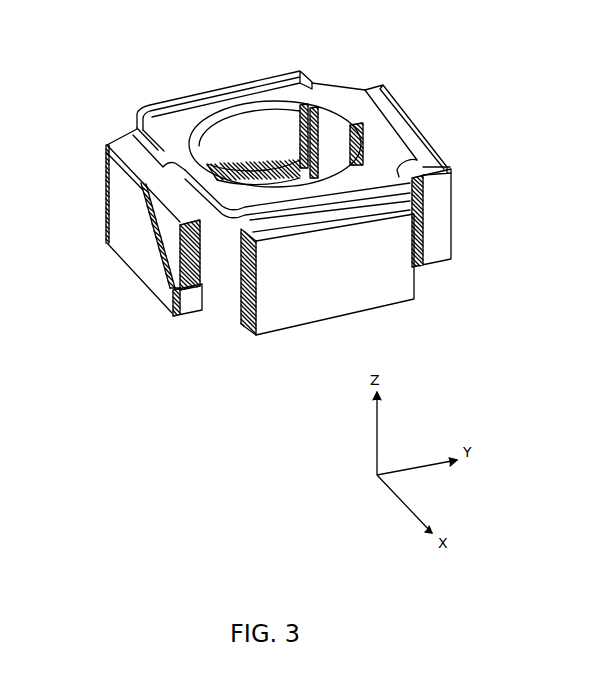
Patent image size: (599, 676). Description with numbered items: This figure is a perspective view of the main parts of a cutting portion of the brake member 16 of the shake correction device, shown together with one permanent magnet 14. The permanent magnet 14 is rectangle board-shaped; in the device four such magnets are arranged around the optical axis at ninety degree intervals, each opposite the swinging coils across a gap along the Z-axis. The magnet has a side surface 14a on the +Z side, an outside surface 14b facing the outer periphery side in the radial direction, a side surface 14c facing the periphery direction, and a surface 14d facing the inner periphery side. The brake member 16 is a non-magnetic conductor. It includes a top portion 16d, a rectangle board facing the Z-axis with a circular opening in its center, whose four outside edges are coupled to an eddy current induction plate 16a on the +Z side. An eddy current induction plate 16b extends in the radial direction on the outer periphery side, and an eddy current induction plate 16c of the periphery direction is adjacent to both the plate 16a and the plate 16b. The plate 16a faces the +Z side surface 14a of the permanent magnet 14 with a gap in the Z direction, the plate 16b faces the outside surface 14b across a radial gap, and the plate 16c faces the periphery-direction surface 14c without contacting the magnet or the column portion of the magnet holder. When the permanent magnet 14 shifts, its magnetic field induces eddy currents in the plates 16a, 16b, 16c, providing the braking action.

The permanent magnet 14 is at (250, 127).
The side surface of +Z side 14a is at (195, 212).
The outside surface 14b is at (163, 238).
The side surface of periphery direction 14c is at (163, 285).
The surface facing to the inside 14d is at (291, 105).
The brake member 16 is at (333, 88).
The eddy current induction plate on +Z side 16a is at (123, 143).
The eddy current induction plate of radial direction 16b is at (120, 203).
The eddy current induction plate of periphery direction 16c is at (190, 303).
The top portion 16d is at (220, 90).